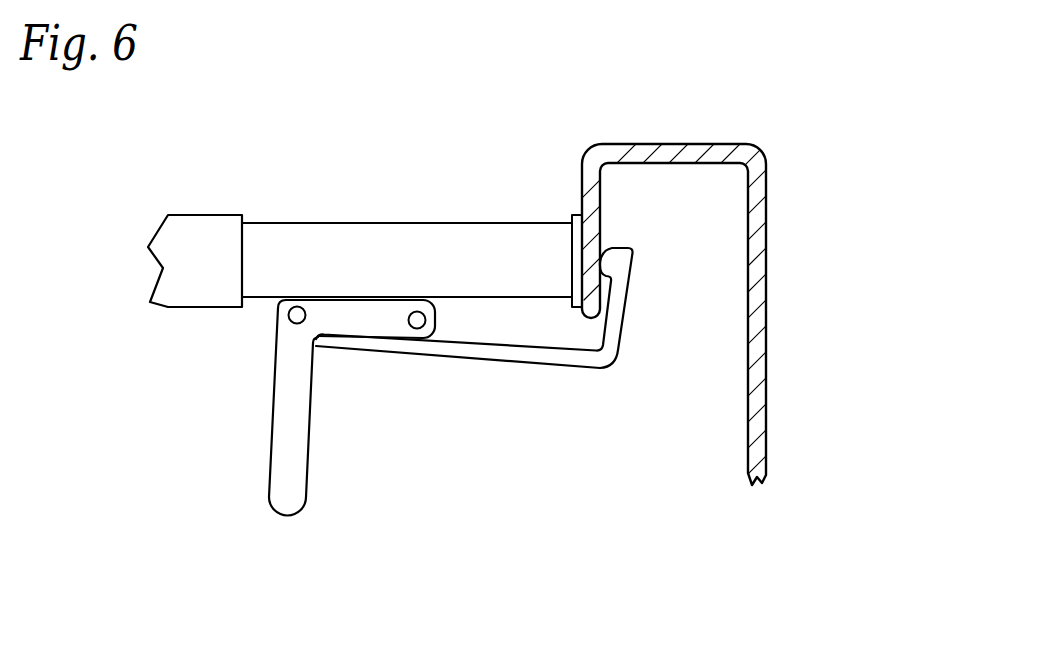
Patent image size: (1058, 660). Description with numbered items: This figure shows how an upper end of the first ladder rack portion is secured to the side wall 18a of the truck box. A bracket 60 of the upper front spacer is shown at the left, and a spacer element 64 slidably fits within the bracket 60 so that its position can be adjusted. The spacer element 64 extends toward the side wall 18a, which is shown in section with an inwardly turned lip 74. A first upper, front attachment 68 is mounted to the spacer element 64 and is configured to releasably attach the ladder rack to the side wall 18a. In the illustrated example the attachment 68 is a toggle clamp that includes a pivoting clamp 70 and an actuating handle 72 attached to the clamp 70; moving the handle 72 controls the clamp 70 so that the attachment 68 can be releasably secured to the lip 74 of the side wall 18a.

The bracket 60 is at (207, 213).
The spacer element 64 is at (340, 222).
The lip 74 is at (580, 193).
The side wall 18a is at (743, 303).
The pivoting clamp 70 is at (565, 368).
The actuating handle 72 is at (270, 450).
The first upper, front attachment 68 is at (413, 380).